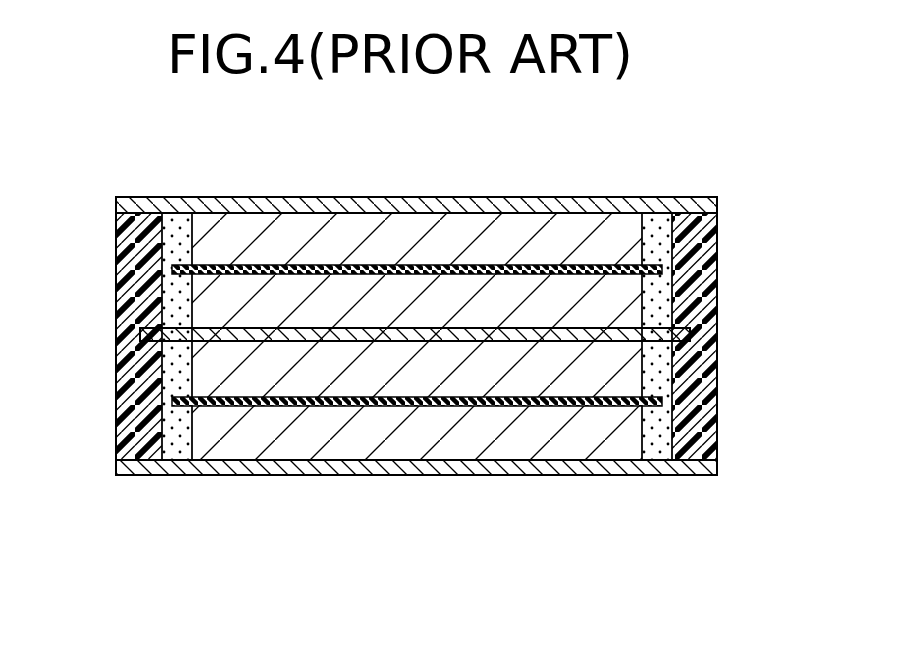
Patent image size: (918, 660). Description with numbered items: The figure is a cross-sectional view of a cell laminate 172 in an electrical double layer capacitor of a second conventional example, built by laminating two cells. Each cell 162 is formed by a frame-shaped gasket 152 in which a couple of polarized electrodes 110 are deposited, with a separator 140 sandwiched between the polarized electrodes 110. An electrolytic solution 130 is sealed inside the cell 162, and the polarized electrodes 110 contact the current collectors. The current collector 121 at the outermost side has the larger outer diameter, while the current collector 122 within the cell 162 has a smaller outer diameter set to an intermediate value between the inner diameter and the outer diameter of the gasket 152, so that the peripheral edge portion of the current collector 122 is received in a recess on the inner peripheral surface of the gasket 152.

The cell laminate 172 is at (668, 163).
The polarized electrode 110 is at (473, 450).
The electrolytic solution 130 is at (653, 456).
The cell 162 is at (100, 335).
The current collector 121 is at (340, 476).
The current collector 122 is at (690, 334).
The separator 140 is at (662, 269).
The gasket 152 is at (705, 403).